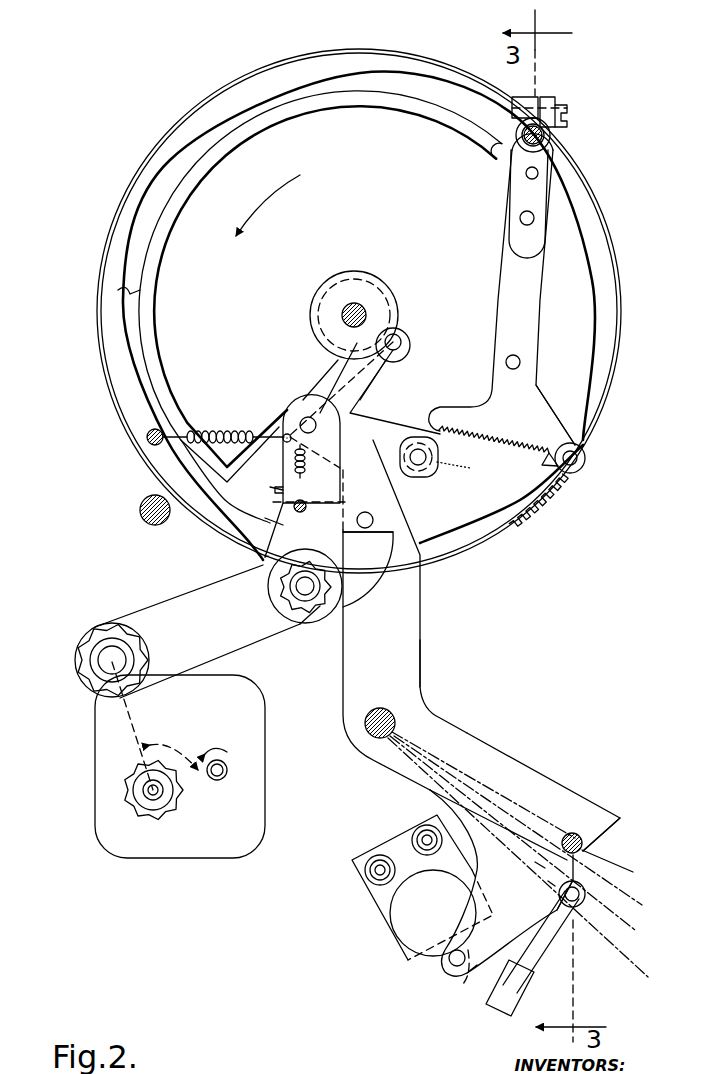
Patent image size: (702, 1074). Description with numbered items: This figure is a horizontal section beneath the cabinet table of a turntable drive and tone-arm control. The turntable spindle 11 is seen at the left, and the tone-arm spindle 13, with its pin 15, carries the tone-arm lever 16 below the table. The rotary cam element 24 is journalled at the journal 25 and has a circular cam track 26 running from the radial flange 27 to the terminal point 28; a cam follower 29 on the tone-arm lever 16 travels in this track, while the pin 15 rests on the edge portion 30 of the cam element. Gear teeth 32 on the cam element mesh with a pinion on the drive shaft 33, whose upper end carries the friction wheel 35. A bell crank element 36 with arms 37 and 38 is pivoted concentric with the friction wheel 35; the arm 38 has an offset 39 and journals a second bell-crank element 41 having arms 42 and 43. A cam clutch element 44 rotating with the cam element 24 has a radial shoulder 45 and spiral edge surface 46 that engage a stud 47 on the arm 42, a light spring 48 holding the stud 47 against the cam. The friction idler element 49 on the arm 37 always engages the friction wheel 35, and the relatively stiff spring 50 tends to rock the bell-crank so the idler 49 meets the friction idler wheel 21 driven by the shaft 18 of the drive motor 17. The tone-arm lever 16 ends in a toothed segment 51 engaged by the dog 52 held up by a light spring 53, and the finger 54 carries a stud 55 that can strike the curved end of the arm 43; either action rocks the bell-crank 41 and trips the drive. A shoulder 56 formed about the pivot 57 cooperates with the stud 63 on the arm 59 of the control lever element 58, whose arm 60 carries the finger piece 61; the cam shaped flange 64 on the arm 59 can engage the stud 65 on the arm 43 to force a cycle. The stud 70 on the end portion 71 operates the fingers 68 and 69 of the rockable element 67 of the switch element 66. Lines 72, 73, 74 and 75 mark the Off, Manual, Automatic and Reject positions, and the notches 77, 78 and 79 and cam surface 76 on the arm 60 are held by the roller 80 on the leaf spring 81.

The vertical spindle 11 is at (141, 514).
The tone-arm spindle 13 is at (548, 135).
The pin or stud 15 is at (500, 142).
The tone-arm lever 16 is at (523, 318).
The drive motor 17 is at (92, 777).
The motor shaft 18 is at (228, 770).
The friction idler wheel 21 is at (126, 815).
The rotary cam element 24 is at (502, 521).
The journal 25 is at (342, 313).
The circular cam track 26 is at (118, 290).
The radial flange 27 is at (322, 378).
The terminal point 28 is at (495, 160).
The cam follower 29 is at (521, 362).
The edge portion 30 is at (592, 395).
The gear teeth 32 is at (567, 490).
The drive shaft 33 is at (303, 600).
The friction wheel 35 is at (320, 606).
The bell crank element 36 is at (256, 561).
The arm 37 is at (190, 603).
The arm 38 is at (268, 522).
The offset 39 is at (280, 490).
The bell-crank element 41 is at (385, 391).
The arm 42 is at (402, 341).
The arm 43 is at (404, 477).
The cam clutch element 44 is at (311, 290).
The radial shoulder 45 is at (382, 386).
The spiral edge surface 46 is at (312, 322).
The stud 47 is at (397, 337).
The light spring 48 is at (275, 488).
The friction idler element 49 is at (76, 636).
The relatively stiff spring 50 is at (238, 432).
The segment 51 is at (517, 424).
The dog 52 is at (433, 430).
The light spring 53 is at (412, 452).
The finger 54 is at (562, 443).
The stud 55 is at (586, 459).
The shoulder 56 is at (386, 530).
The pivot 57 is at (393, 717).
The control lever element 58 is at (425, 670).
The arm 59 is at (422, 590).
The arm 60 is at (534, 770).
The finger piece 61 is at (576, 834).
The stud 63 is at (367, 512).
The cam shaped flange 64 is at (306, 462).
The stud 65 is at (448, 464).
The switch element 66 is at (373, 920).
The rockable element 67 is at (410, 918).
The finger 68 is at (450, 963).
The finger 69 is at (467, 968).
The stud 70 is at (448, 975).
The end portion 71 is at (476, 975).
The line 72 is at (618, 852).
The line 73 is at (616, 890).
The line 74 is at (618, 922).
The line 75 is at (626, 968).
The cam surface 76 is at (598, 835).
The notch 77 is at (556, 886).
The notch 78 is at (548, 881).
The notch 79 is at (535, 862).
The roller 80 is at (566, 906).
The leaf spring 81 is at (540, 965).